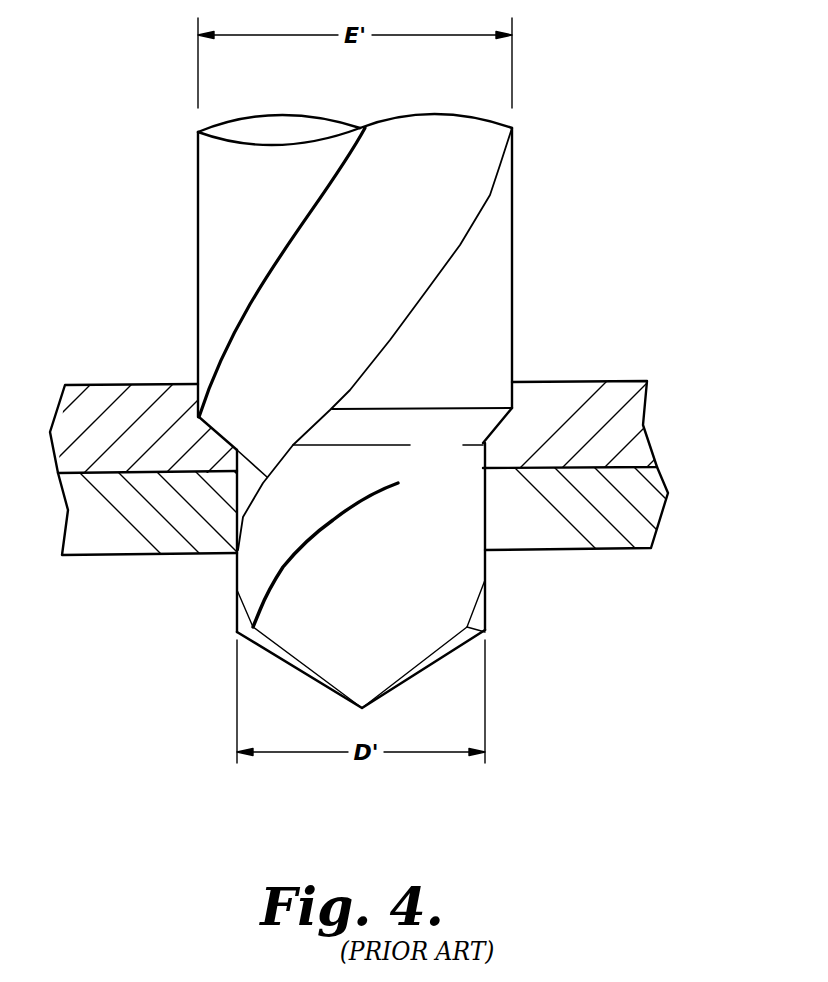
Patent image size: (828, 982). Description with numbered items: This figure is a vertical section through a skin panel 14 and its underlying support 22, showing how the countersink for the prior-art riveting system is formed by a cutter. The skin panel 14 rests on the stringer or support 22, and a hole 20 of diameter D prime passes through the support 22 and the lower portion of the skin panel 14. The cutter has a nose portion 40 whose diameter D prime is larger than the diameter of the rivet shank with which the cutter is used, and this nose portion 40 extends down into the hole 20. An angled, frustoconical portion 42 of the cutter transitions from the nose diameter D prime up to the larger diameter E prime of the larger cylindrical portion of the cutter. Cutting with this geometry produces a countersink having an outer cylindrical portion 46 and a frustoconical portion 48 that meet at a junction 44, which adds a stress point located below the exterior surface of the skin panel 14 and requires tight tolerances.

The skin panel 14 is at (636, 382).
The underlying support 22 is at (610, 537).
The hole 20 is at (486, 530).
The nose portion 40 is at (450, 602).
The frustoconical portion 42 is at (488, 432).
The junction 44 is at (512, 408).
The outer cylindrical portion 46 is at (514, 380).
The frustoconical portion 48 is at (503, 416).